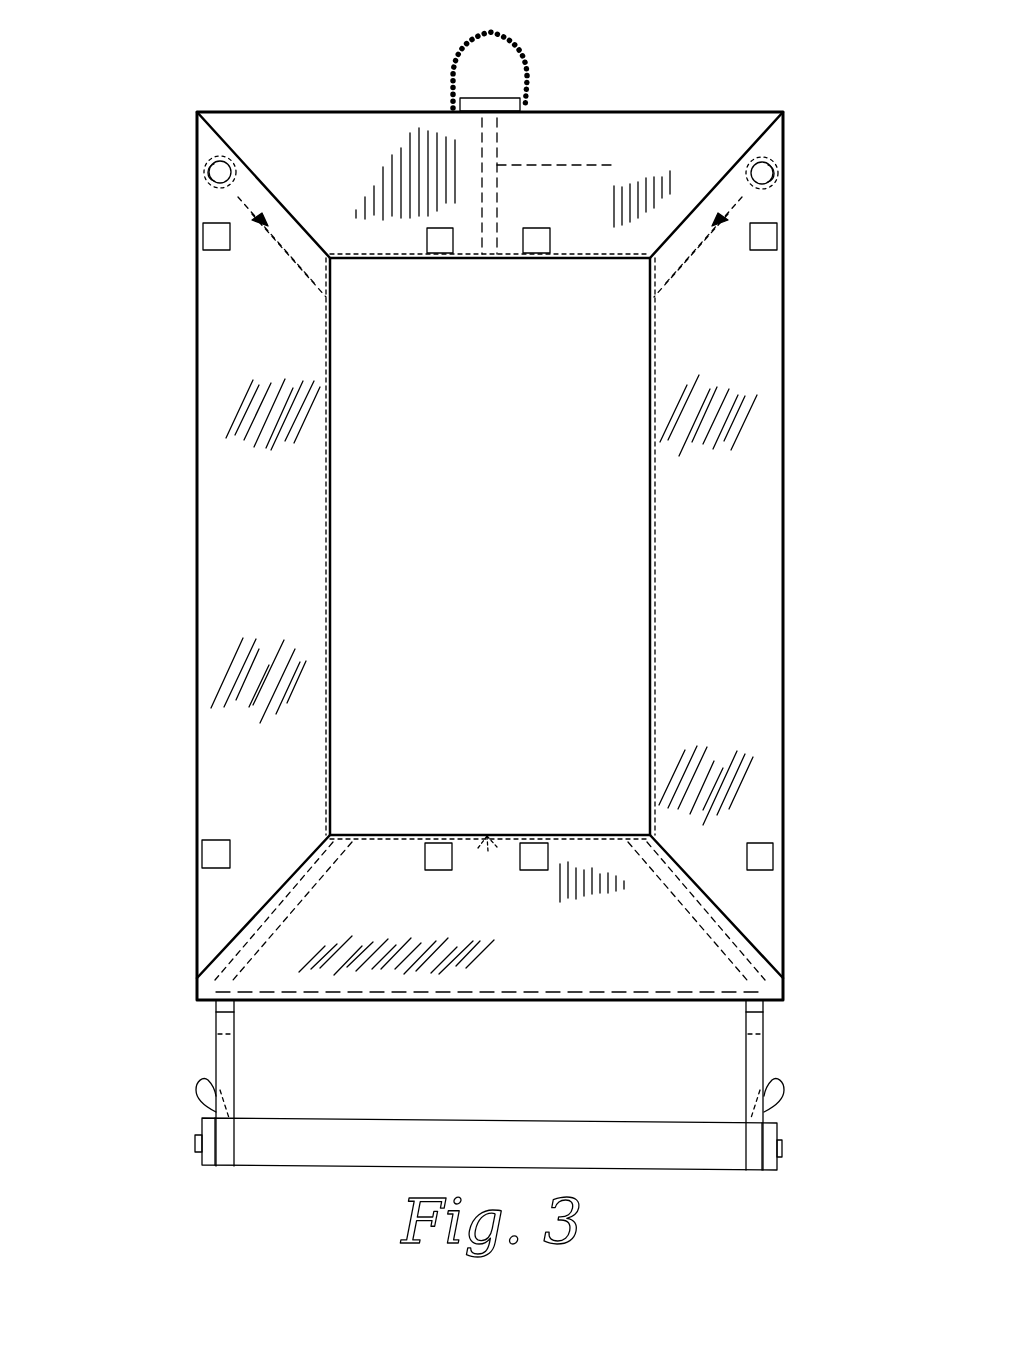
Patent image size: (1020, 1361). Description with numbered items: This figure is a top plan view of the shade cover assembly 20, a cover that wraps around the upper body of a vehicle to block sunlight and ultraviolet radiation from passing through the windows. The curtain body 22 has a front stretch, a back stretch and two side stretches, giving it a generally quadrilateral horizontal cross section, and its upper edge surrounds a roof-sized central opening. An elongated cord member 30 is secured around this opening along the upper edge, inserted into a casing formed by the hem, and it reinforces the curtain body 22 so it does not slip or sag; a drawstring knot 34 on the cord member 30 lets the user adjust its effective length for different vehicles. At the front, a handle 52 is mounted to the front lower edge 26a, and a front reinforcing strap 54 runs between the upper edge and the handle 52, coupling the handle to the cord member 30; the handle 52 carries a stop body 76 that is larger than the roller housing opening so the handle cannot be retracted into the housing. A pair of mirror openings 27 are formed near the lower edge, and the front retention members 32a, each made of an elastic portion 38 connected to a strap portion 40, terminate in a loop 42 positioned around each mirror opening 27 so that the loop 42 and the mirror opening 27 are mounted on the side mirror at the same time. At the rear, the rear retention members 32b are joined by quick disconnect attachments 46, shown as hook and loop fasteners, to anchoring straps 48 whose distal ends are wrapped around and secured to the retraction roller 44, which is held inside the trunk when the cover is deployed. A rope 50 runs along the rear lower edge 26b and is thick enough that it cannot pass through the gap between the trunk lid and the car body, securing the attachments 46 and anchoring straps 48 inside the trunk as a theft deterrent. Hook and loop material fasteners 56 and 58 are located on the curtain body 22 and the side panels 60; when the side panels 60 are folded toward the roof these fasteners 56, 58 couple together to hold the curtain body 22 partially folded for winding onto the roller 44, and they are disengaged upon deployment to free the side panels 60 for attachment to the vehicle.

The shade cover assembly 20 is at (193, 560).
The curtain body 22 is at (730, 480).
The front lower edge 26a is at (350, 112).
The rear lower edge 26b is at (410, 1002).
The mirror openings 27 is at (217, 182).
The cord member 30 is at (656, 714).
The front retention members 32a is at (312, 282).
The rear retention members 32b is at (258, 924).
The drawstring knot 34 is at (487, 836).
The elastic portion 38 is at (258, 192).
The strap portion 40 is at (283, 252).
The loop 42 is at (212, 165).
The retraction roller 44 is at (287, 1170).
The quick disconnect attachments 46 is at (216, 1022).
The anchoring straps 48 is at (205, 1072).
The rope 50 is at (612, 1000).
The handle 52 is at (453, 78).
The front reinforcing strap 54 is at (613, 165).
The hook and loop material fasteners 56 is at (440, 254).
The hook and loop material fasteners 58 is at (203, 236).
The side panels 60 is at (247, 544).
The stop body 76 is at (498, 105).